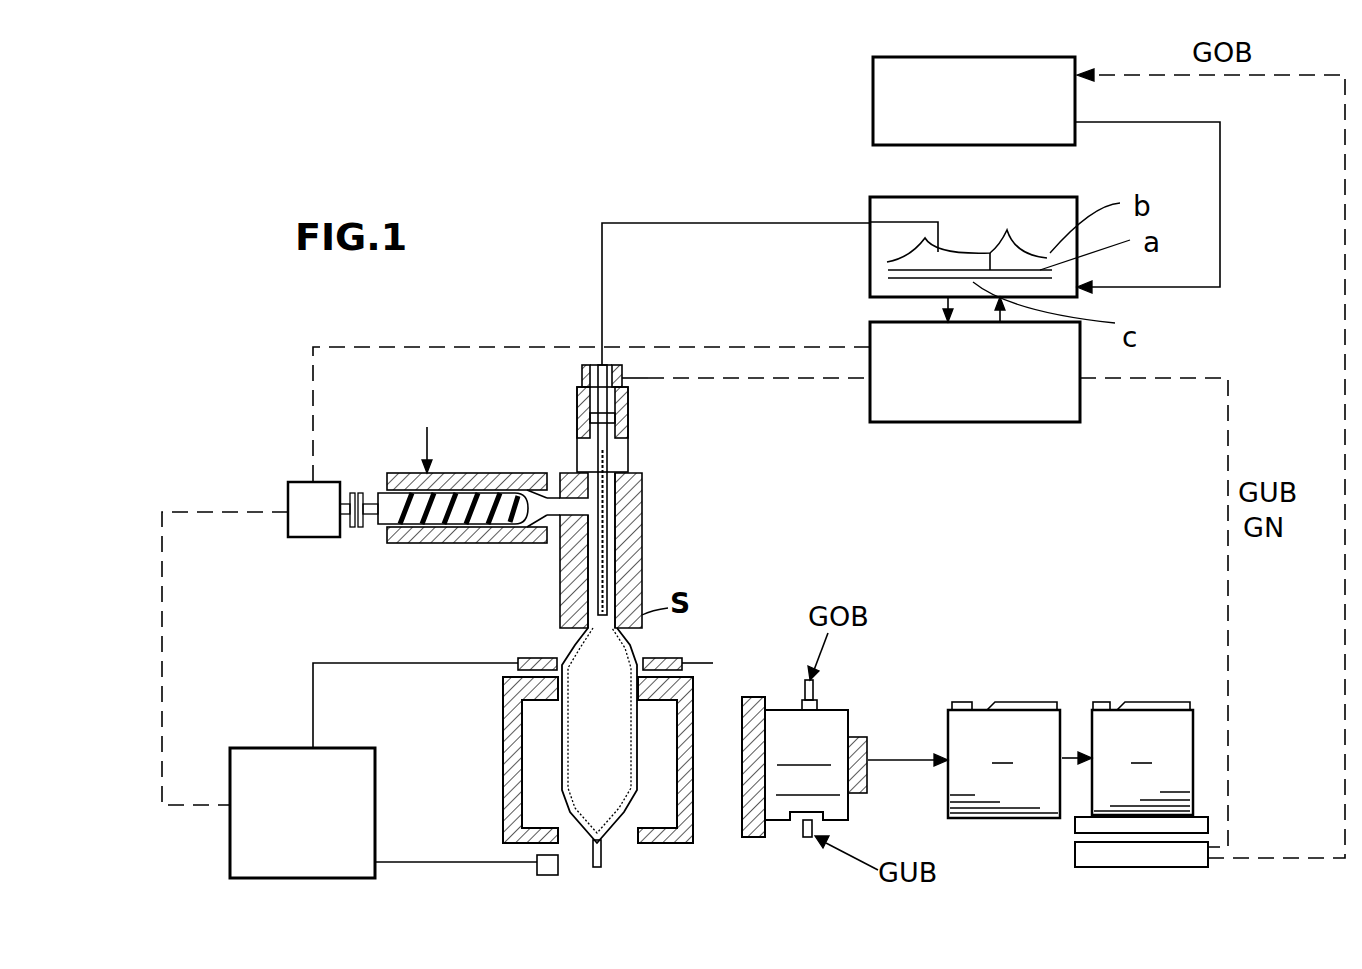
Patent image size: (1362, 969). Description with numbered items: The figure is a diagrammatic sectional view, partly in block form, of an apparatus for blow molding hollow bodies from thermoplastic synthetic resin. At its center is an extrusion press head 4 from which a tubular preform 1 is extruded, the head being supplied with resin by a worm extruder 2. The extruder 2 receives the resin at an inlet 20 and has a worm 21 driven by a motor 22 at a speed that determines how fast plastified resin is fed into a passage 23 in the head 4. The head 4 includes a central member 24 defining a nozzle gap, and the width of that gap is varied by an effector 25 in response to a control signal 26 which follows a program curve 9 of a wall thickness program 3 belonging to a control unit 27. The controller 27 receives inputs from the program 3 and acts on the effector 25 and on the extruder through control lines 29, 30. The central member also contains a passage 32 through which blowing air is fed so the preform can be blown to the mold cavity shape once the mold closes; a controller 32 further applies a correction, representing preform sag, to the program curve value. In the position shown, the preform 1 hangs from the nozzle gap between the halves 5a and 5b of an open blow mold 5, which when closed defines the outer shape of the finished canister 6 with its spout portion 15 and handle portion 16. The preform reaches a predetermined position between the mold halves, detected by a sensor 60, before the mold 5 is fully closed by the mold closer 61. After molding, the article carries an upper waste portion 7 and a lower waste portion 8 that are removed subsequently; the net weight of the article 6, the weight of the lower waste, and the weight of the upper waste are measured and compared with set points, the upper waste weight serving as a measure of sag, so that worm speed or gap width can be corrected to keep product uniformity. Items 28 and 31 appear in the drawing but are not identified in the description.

The tubular preform 1 is at (620, 826).
The worm extruder 2 is at (462, 500).
The wall thickness program 3 is at (958, 230).
The extrusion press head 4 is at (642, 519).
The blow mold 5 is at (494, 738).
The mold half 5a is at (512, 820).
The mold half 5b is at (692, 812).
The blow-molded canister 6 is at (840, 722).
The upper waste portion 7 is at (800, 692).
The lower waste portion 8 is at (803, 830).
The program curve 9 is at (1012, 237).
The spout portion 15 is at (958, 702).
The handle portion 16 is at (1030, 702).
The inlet 20 is at (392, 473).
The worm 21 is at (430, 543).
The motor 22 is at (290, 485).
The passage 23 is at (615, 585).
The central member 24 is at (565, 648).
The effector 25 is at (630, 395).
The control signal 26 is at (602, 246).
The control unit 27 is at (1063, 422).
The weighing device 28 is at (1082, 858).
The control line 29 is at (728, 347).
The control line 30 is at (808, 378).
The signal line 31 is at (1228, 435).
The controller 32 is at (873, 118).
The sensor 60 is at (537, 872).
The mold closer 61 is at (230, 838).